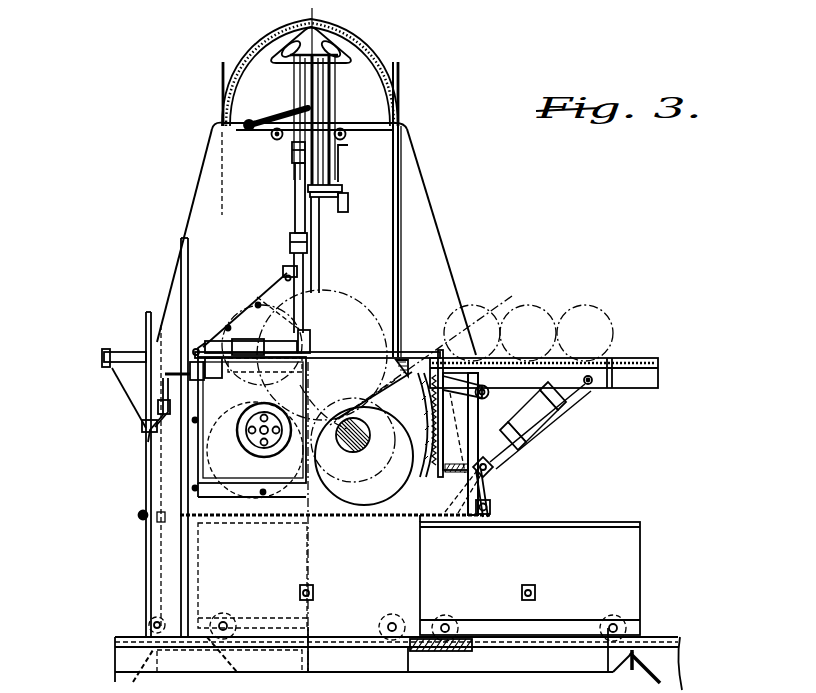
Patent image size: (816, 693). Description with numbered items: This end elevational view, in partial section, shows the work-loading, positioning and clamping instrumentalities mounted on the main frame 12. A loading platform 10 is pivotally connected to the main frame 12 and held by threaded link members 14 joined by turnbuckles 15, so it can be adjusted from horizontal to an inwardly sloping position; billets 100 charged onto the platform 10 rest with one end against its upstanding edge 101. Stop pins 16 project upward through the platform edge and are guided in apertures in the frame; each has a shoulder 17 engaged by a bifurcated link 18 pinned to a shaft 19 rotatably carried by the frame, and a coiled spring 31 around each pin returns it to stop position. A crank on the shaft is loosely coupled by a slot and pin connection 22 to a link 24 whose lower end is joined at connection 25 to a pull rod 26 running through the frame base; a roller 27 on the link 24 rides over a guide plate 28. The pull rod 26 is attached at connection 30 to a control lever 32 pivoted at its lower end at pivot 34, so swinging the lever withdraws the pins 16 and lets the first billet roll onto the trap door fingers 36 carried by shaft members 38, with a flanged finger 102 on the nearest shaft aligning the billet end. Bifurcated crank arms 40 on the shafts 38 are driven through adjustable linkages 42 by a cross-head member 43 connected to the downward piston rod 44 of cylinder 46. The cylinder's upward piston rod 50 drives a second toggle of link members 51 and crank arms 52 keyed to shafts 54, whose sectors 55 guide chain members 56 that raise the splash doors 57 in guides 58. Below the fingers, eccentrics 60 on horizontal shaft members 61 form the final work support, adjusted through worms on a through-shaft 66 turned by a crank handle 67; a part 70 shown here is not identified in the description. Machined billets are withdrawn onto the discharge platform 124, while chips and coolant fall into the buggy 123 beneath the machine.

The loading platform 10 is at (632, 358).
The main frame 12 is at (192, 190).
The threaded link members 14 is at (590, 384).
The turnbuckles 15 is at (548, 432).
The stop pins 16 is at (438, 350).
The shoulders 17 is at (380, 397).
The links 18 is at (498, 345).
The shaft 19 is at (489, 395).
The slot and pin connection 22 is at (490, 310).
The link 24 is at (482, 486).
The connection 25 is at (483, 522).
The pull rod 26 is at (160, 530).
The roller 27 is at (492, 506).
The guide plate 28 is at (440, 527).
The connection 30 is at (140, 512).
The coiled spring 31 is at (418, 405).
The control lever 32 is at (146, 312).
The pivot 34 is at (150, 622).
The fingers 36 is at (362, 352).
The shaft members 38 is at (406, 360).
The bifurcated crank arms 40 is at (203, 343).
The adjustable linkages 42 is at (250, 320).
The cross-head member 43 is at (280, 300).
The piston rod 44 is at (285, 266).
The cylinder 46 is at (295, 200).
The piston rod 50 is at (292, 135).
The link members 51 is at (272, 114).
The crank arms 52 is at (240, 124).
The shafts 54 is at (272, 136).
The sectors 55 is at (290, 35).
The chain members 56 is at (258, 48).
The splash doors 57 is at (220, 74).
The guides 58 is at (392, 240).
The eccentrics 60 is at (380, 500).
The shaft members 61 is at (365, 446).
The through-shaft 66 is at (176, 362).
The crank handle 67 is at (150, 436).
The block 70 is at (330, 168).
The billets 100 is at (610, 328).
The upstanding edge 101 is at (575, 340).
The flanged finger 102 is at (342, 360).
The buggy 123 is at (382, 590).
The discharge platform 124 is at (125, 352).